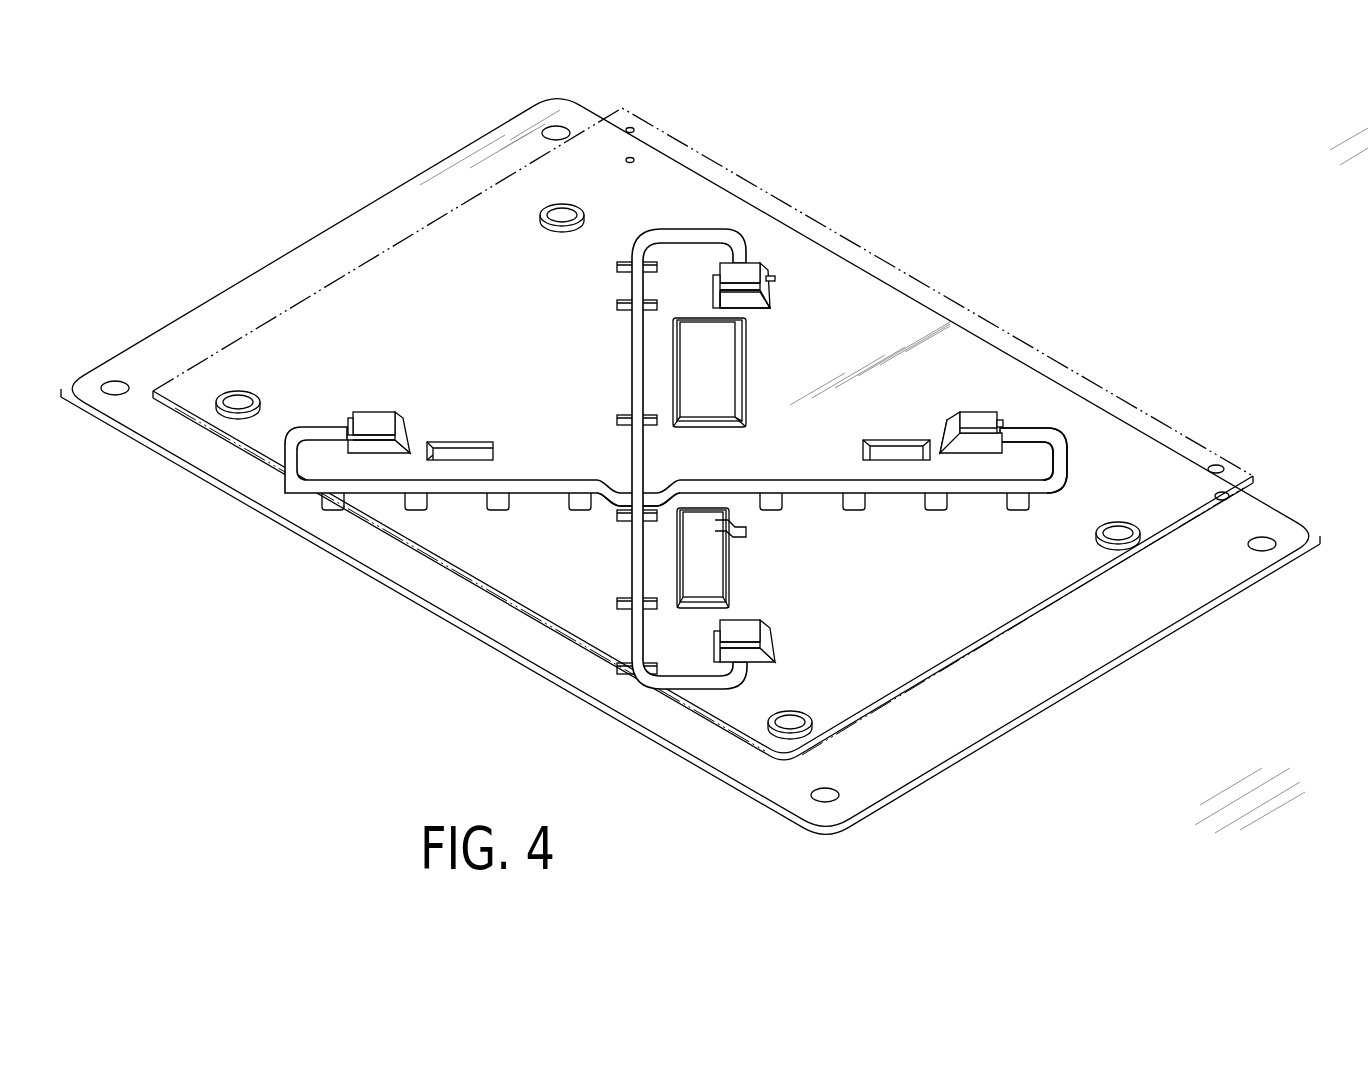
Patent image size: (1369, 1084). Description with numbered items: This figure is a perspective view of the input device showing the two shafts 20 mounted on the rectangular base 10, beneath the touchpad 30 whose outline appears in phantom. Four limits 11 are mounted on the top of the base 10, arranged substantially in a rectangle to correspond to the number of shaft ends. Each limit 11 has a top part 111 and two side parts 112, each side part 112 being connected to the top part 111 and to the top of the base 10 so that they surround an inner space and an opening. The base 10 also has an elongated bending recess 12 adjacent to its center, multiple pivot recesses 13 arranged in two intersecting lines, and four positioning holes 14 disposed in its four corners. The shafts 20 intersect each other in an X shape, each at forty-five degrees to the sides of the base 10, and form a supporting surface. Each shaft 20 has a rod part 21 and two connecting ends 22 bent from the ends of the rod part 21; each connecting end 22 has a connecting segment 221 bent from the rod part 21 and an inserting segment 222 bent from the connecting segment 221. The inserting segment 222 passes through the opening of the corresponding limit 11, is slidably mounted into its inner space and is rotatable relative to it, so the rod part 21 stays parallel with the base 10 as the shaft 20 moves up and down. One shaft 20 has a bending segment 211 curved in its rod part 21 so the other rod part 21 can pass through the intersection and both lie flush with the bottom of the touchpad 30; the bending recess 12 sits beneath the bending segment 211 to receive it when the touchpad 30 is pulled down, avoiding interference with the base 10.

The base 10 is at (1160, 414).
The limit 11 is at (788, 430).
The top part 111 is at (738, 270).
The side part 112 is at (767, 292).
The bending recess 12 is at (605, 510).
The pivot recess 13 is at (617, 603).
The positioning hole 14 is at (227, 413).
The shaft 20 is at (914, 525).
The rod part 21 is at (676, 516).
The bending segment 211 is at (663, 497).
The connecting end 22 is at (1090, 465).
The connecting segment 221 is at (1057, 470).
The inserting segment 222 is at (1020, 432).
The touchpad 30 is at (968, 309).